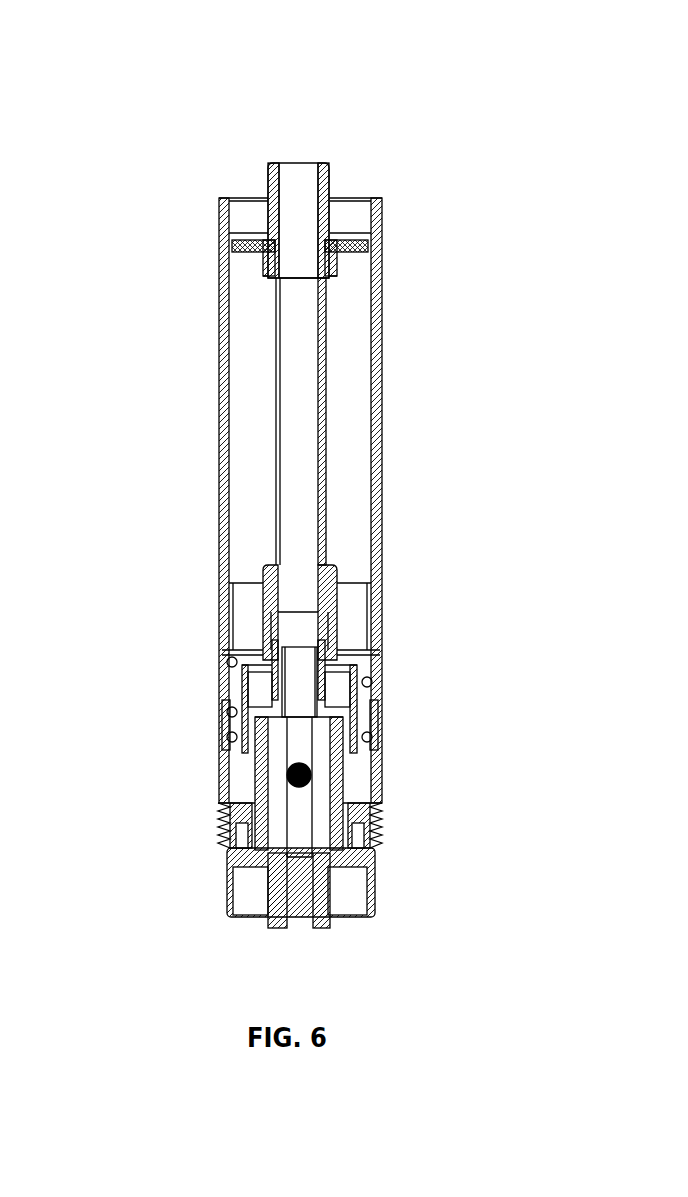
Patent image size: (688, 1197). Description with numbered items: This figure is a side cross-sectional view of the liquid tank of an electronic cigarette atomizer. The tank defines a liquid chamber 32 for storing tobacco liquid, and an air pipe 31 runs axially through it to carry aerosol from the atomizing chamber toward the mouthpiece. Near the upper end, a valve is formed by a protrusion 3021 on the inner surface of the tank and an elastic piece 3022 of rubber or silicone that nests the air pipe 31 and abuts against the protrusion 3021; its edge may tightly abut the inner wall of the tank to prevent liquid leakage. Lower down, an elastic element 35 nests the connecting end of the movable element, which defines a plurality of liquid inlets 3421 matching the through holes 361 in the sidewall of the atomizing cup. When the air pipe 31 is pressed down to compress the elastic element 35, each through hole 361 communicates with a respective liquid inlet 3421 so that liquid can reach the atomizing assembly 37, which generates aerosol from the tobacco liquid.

The air pipe 31 is at (333, 172).
The liquid chamber 32 is at (342, 453).
The protrusion 3021 is at (238, 233).
The elastic piece 3022 is at (342, 252).
The elastic element 35 is at (227, 662).
The liquid inlet 3421 is at (227, 728).
The through hole 361 is at (220, 750).
The atomizing assembly 37 is at (312, 787).